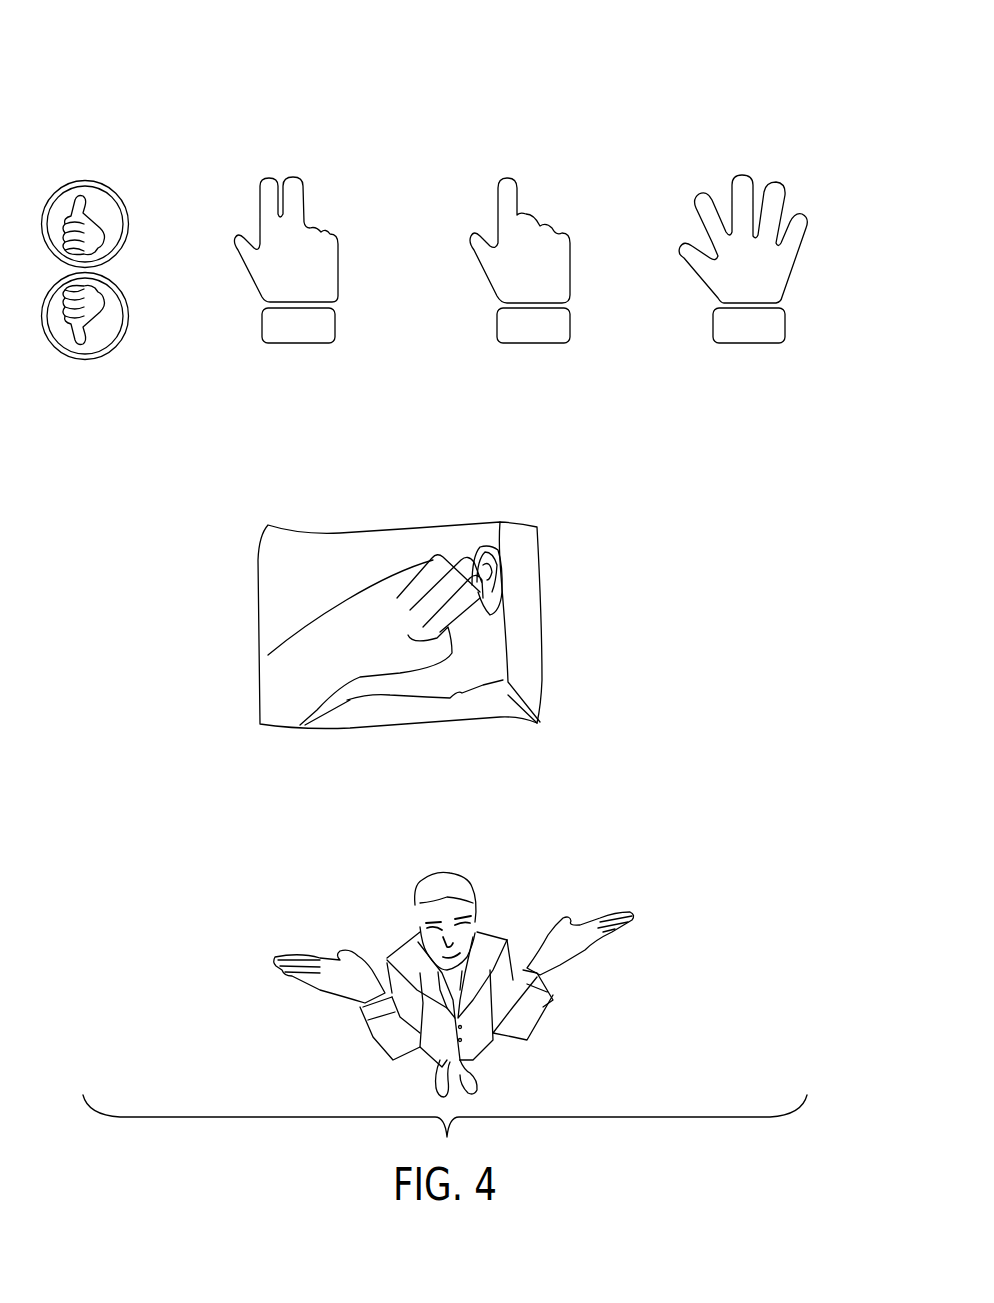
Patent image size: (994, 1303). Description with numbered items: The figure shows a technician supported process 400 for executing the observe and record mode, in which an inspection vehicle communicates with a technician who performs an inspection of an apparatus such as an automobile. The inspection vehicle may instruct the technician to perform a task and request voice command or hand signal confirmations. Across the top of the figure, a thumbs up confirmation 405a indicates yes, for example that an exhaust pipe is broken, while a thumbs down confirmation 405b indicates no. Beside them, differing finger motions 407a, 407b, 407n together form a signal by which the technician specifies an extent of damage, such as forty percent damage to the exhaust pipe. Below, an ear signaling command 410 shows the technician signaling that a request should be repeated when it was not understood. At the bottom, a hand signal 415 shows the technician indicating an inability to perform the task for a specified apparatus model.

The technician supported process 400 is at (438, 568).
The thumbs up confirmation 405a is at (119, 198).
The thumbs down confirmation 405b is at (119, 291).
The finger motion 407a is at (308, 240).
The finger motion 407b is at (546, 240).
The finger motion 407n is at (756, 215).
The ear signaling command 410 is at (451, 578).
The hand signal 415 is at (454, 942).